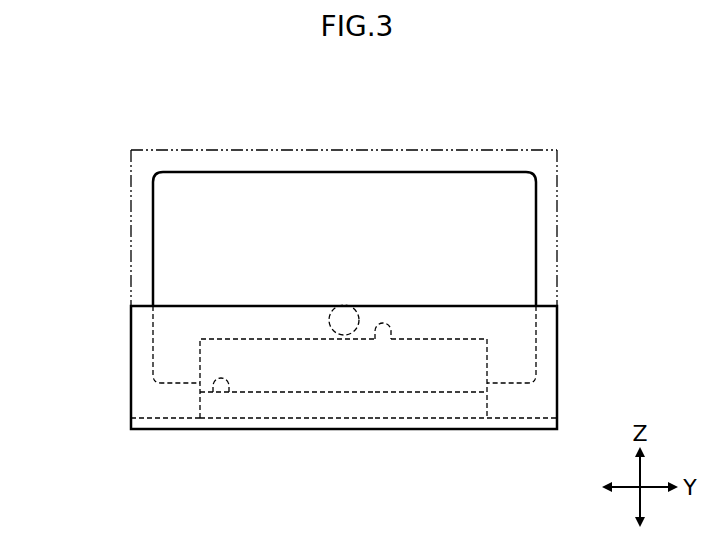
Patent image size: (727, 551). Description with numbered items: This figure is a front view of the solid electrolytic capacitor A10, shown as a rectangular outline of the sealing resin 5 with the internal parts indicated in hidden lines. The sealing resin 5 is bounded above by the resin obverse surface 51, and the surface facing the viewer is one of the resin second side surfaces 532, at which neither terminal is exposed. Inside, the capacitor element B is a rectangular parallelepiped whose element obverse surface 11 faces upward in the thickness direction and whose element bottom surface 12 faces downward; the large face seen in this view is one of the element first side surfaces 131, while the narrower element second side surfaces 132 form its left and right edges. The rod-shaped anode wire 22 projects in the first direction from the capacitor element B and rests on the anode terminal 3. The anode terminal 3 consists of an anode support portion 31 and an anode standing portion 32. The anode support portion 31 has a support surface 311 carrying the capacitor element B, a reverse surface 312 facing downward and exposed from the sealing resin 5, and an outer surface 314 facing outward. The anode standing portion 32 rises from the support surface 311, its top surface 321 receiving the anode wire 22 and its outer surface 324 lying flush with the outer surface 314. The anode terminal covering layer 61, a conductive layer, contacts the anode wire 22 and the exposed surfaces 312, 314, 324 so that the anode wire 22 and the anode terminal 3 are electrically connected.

The solid electrolytic capacitor A10 is at (118, 118).
The sealing resin 5 is at (570, 158).
The resin obverse surface 51 is at (497, 150).
The resin second side surfaces 532 is at (131, 204).
The element obverse surface 11 is at (320, 172).
The capacitor element B is at (241, 163).
The element first side surfaces 131 is at (408, 213).
The element second side surfaces 132 is at (153, 241).
The anode terminal covering layer 61 is at (533, 396).
The anode wire 22 is at (340, 320).
The element bottom surface 12 is at (168, 383).
The anode terminal 3 is at (413, 505).
The anode support portion 31 is at (332, 470).
The support surface 311 is at (213, 392).
The reverse surface 312 is at (262, 418).
The outer surface 314 is at (310, 402).
The anode standing portion 32 is at (447, 470).
The top surface 321 is at (375, 339).
The outer surface 324 is at (422, 365).